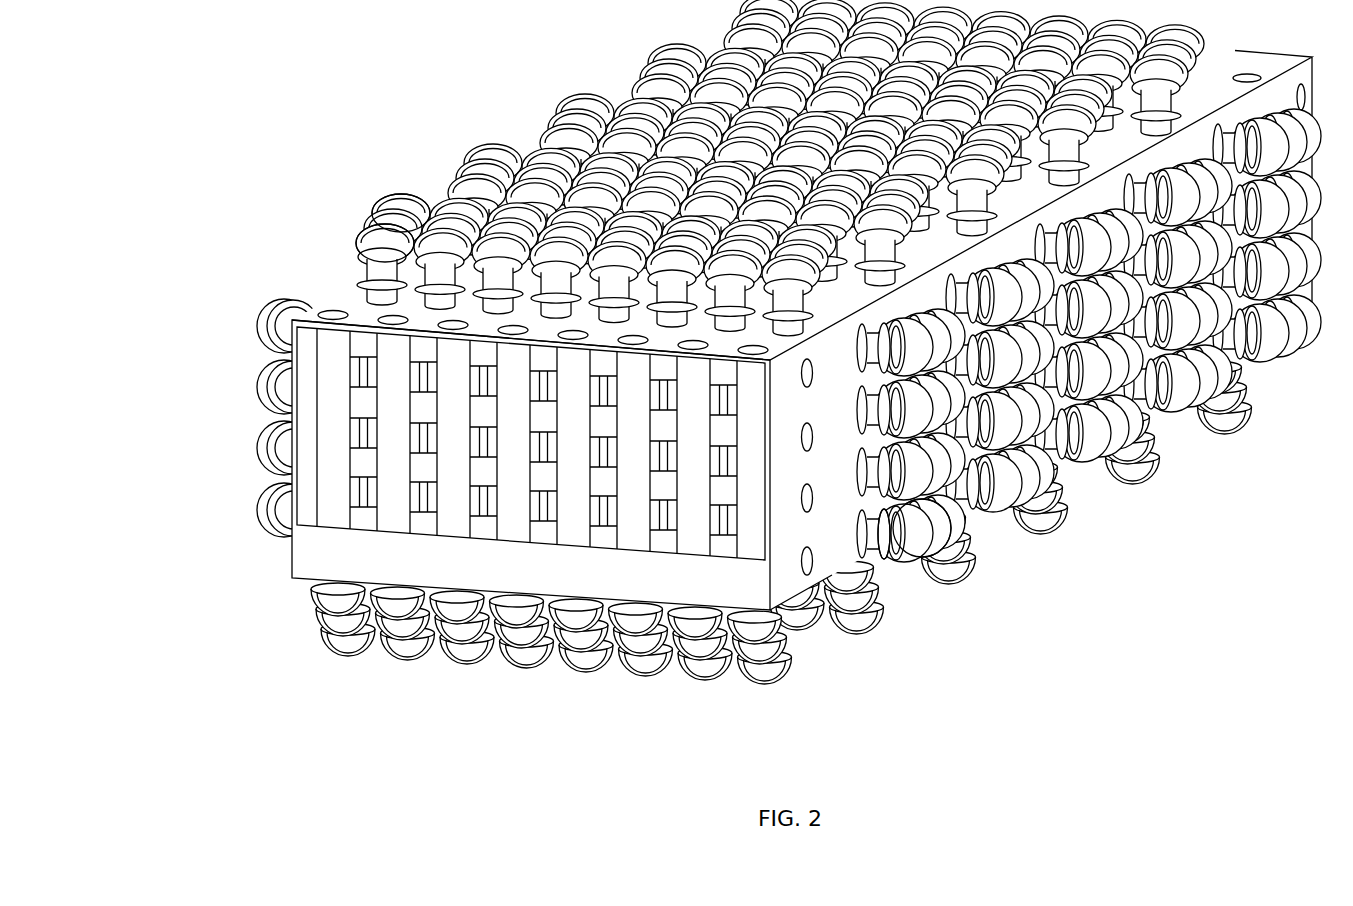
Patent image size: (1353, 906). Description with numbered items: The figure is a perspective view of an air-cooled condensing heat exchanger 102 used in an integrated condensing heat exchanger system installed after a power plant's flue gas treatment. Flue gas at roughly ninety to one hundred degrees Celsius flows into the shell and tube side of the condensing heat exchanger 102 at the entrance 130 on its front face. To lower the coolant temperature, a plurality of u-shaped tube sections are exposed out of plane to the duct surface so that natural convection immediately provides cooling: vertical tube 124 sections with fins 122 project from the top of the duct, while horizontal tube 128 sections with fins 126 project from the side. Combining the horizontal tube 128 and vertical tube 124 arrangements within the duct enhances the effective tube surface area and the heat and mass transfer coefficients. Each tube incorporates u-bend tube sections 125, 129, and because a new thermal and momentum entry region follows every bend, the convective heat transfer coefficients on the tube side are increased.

The condensing heat exchanger 102 is at (237, 432).
The fins 122 is at (368, 237).
The vertical tube 124 is at (385, 245).
The u-bend tube sections 125 is at (402, 225).
The fins 126 is at (887, 546).
The horizontal tube 128 is at (898, 545).
The u-bend tube sections 129 is at (925, 540).
The entrance 130 is at (360, 505).